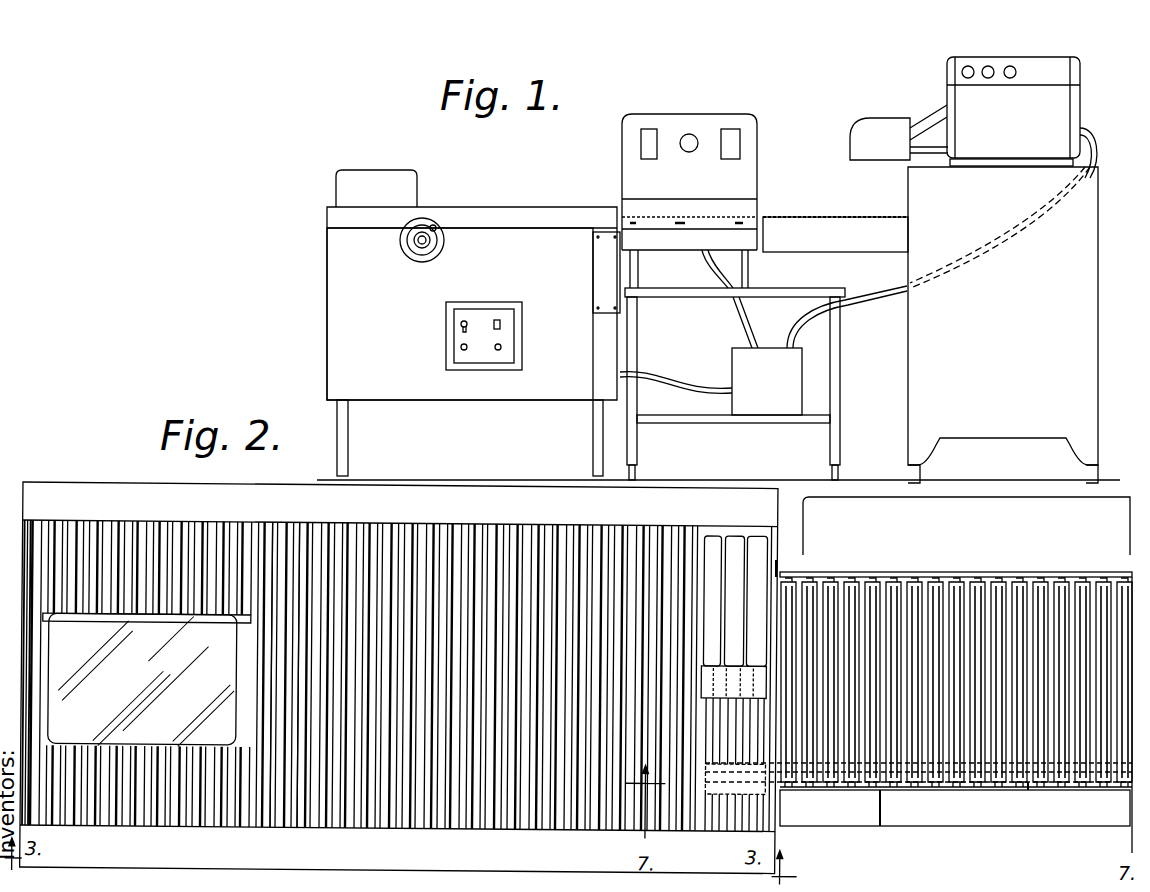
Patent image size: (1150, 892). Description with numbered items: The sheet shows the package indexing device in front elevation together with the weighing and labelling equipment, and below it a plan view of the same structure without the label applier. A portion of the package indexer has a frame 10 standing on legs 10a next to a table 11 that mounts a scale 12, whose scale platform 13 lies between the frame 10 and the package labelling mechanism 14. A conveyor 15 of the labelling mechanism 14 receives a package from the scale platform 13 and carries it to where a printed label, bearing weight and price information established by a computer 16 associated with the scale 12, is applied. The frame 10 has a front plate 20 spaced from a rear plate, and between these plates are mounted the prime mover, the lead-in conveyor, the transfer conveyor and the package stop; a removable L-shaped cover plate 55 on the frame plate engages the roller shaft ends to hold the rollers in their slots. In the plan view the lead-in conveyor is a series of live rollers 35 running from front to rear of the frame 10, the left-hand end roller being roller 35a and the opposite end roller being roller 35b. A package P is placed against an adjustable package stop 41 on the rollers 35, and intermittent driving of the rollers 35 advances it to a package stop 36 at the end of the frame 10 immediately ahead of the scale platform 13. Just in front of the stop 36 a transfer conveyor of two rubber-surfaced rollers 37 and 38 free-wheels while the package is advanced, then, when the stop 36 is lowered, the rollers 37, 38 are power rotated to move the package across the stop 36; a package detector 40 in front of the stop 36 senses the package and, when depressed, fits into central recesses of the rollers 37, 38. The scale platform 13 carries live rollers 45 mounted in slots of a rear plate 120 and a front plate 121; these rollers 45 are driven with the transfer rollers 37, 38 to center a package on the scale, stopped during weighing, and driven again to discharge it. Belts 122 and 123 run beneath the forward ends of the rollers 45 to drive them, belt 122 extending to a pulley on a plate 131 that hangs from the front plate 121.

In FIG. 1, the frame 10 is at (325, 293).
In FIG. 2, the frame 10 is at (105, 480).
In FIG. 1, the legs 10a is at (348, 438).
In FIG. 1, the table 11 is at (812, 292).
In FIG. 1, the scale 12 is at (745, 178).
In FIG. 2, the scale 12 is at (1079, 532).
In FIG. 1, the scale platform 13 is at (750, 238).
In FIG. 2, the scale platform 13 is at (1048, 790).
In FIG. 1, the package labelling mechanism 14 is at (930, 94).
In FIG. 1, the conveyor 15 is at (838, 226).
In FIG. 1, the computer 16 is at (779, 387).
In FIG. 1, the front plate 20 is at (540, 272).
In FIG. 2, the live rollers 35 is at (297, 522).
In FIG. 2, the left-hand end roller 35a is at (48, 520).
In FIG. 2, the end roller 35b is at (712, 528).
In FIG. 2, the package stop 36 is at (776, 567).
In FIG. 2, the rubber-surfaced roller 37 is at (733, 530).
In FIG. 2, the rubber-surfaced roller 38 is at (758, 530).
In FIG. 2, the package detector 40 is at (755, 670).
In FIG. 1, the adjustable package stop 41 is at (372, 180).
In FIG. 2, the adjustable package stop 41 is at (152, 612).
In FIG. 2, the live rollers 45 is at (870, 766).
In FIG. 2, the cover plate 55 is at (428, 514).
In FIG. 2, the rear plate 120 is at (975, 571).
In FIG. 2, the front plate 121 is at (983, 788).
In FIG. 2, the belt 122 is at (887, 790).
In FIG. 2, the belt 123 is at (1032, 787).
In FIG. 2, the plate 131 is at (760, 792).
In FIG. 2, the package P is at (142, 692).